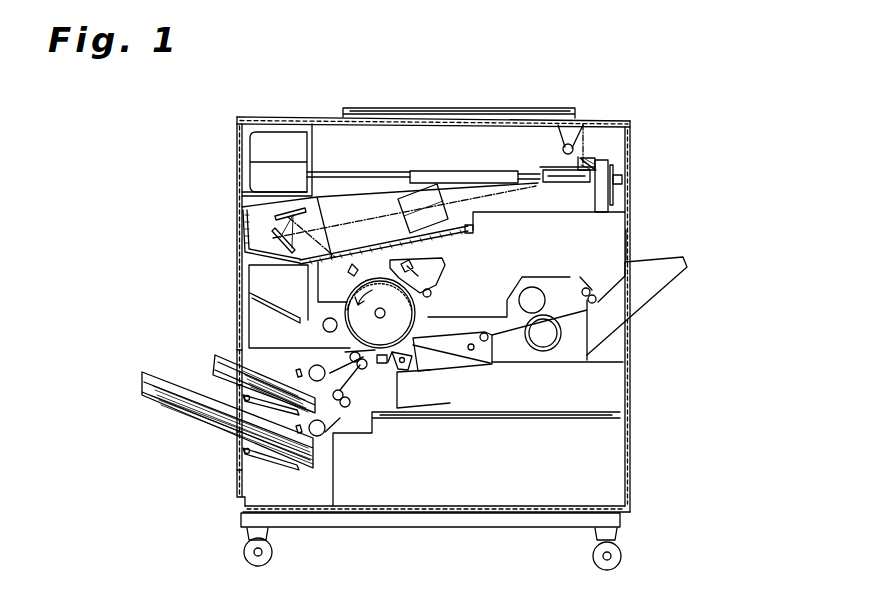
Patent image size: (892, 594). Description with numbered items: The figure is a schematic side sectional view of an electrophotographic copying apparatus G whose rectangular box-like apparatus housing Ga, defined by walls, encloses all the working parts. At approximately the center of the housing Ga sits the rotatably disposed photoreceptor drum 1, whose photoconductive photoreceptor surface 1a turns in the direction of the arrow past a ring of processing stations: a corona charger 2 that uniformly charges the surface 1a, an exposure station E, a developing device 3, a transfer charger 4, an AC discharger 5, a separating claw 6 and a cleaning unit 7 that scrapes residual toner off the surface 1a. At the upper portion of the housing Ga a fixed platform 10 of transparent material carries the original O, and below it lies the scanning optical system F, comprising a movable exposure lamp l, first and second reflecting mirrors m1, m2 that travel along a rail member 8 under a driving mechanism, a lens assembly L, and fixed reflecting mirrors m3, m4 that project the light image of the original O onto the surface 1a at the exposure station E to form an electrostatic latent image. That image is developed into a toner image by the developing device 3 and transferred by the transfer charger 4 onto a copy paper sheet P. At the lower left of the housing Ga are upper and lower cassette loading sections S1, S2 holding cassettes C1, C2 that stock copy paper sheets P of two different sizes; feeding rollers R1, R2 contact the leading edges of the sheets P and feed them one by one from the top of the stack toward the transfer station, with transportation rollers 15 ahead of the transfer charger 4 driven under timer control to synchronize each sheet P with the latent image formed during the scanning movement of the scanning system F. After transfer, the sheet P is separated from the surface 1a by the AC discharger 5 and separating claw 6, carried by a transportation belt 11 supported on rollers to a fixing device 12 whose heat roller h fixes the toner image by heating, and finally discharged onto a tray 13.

The copying apparatus G is at (660, 112).
The apparatus housing Ga is at (630, 242).
The original O is at (410, 108).
The platform 10 is at (507, 121).
The exposure lamp l is at (554, 124).
The first reflecting mirror m1 is at (578, 156).
The second reflecting mirror m2 is at (623, 195).
The fixed reflecting mirror m3 is at (276, 238).
The fixed reflecting mirror m4 is at (278, 212).
The rail member 8 is at (341, 172).
The scanning optical system F is at (376, 190).
The lens assembly L is at (426, 200).
The developing device 3 is at (262, 272).
The corona charger 2 is at (352, 263).
The cleaning unit 7 is at (433, 263).
The photoreceptor drum 1 is at (430, 310).
The photoreceptor surface 1a is at (432, 306).
The exposure station E is at (350, 294).
The copy paper sheet feeding roller R1 is at (311, 364).
The copy paper sheet feeding roller R2 is at (316, 440).
The upper cassette loading section S1 is at (215, 352).
The lower cassette loading section S2 is at (142, 385).
The cassette C1 is at (215, 377).
The cassette C2 is at (162, 405).
The copy paper sheet P is at (232, 363).
The transportation rollers 15 is at (350, 395).
The transfer charger 4 is at (380, 363).
The AC discharger 5 is at (408, 370).
The separating claw 6 is at (432, 350).
The transportation belt 11 is at (490, 316).
The fixing device 12 is at (546, 285).
The heat roller h is at (547, 298).
The tray 13 is at (652, 300).